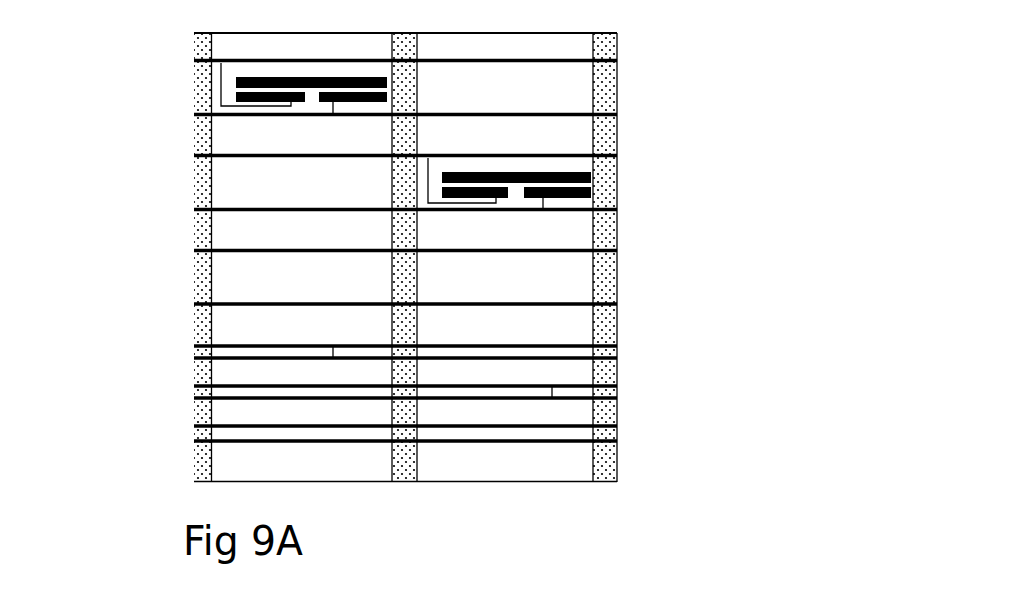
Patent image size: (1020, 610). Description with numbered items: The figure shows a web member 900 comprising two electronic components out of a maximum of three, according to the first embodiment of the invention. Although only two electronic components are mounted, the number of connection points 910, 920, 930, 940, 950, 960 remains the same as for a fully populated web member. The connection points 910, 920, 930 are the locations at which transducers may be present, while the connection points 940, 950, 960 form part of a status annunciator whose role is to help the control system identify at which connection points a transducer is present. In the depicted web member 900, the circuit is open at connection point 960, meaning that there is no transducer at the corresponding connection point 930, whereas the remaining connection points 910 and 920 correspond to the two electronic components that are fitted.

The web member 900 is at (555, 487).
The connection point 910 is at (200, 107).
The connection point 920 is at (190, 211).
The connection point 930 is at (193, 307).
The connection point 940 is at (193, 358).
The connection point 950 is at (193, 392).
The connection point 960 is at (193, 438).